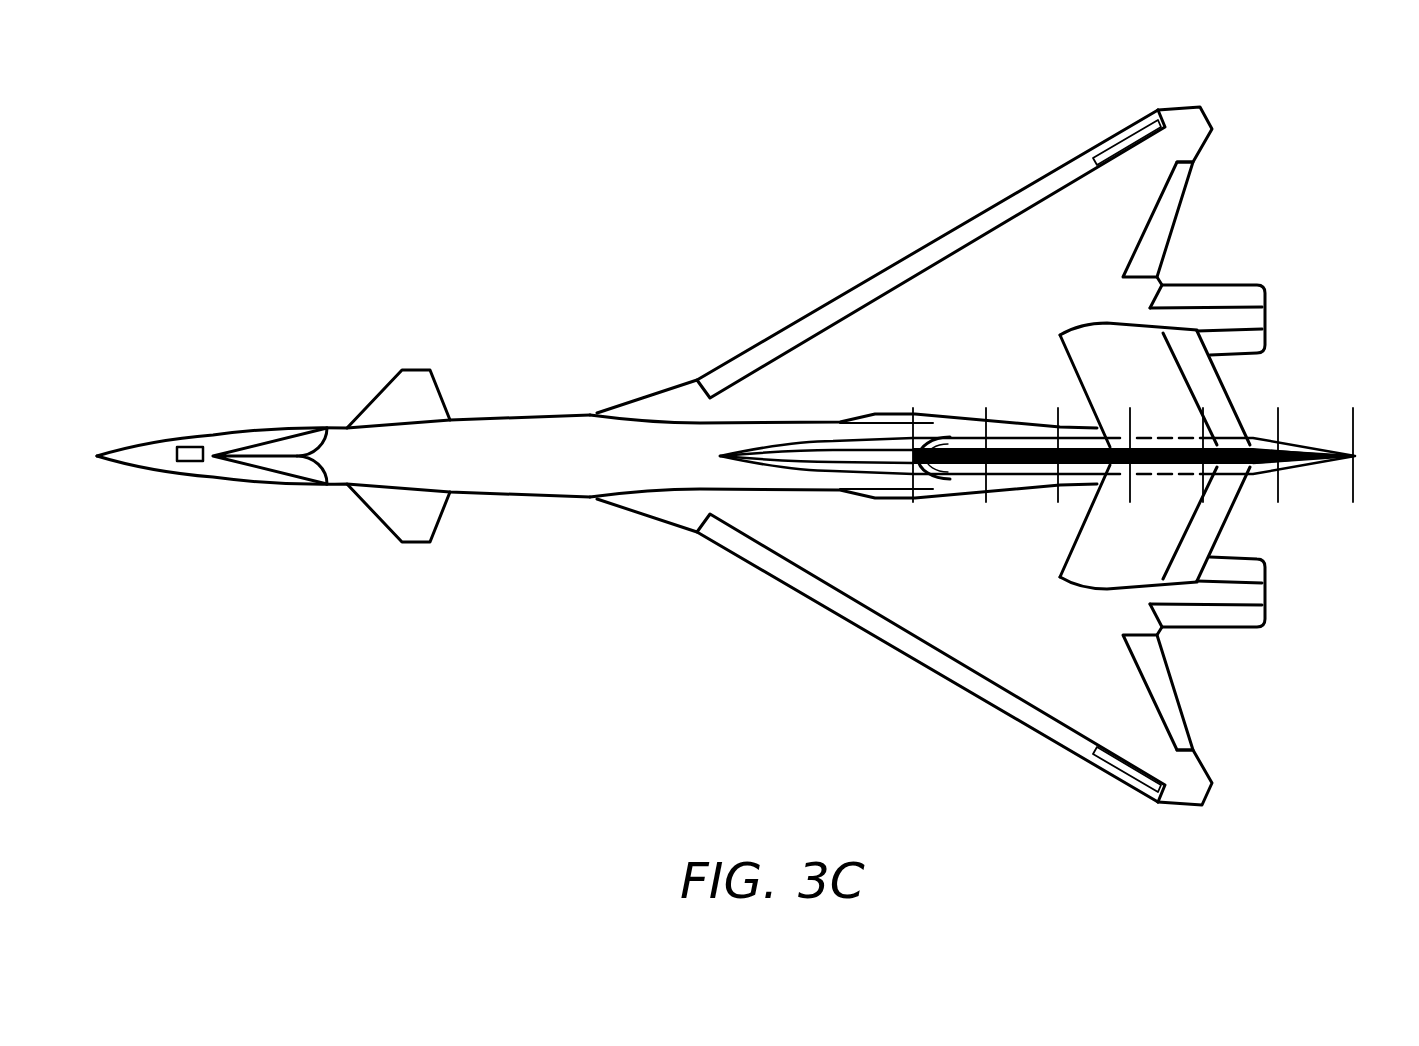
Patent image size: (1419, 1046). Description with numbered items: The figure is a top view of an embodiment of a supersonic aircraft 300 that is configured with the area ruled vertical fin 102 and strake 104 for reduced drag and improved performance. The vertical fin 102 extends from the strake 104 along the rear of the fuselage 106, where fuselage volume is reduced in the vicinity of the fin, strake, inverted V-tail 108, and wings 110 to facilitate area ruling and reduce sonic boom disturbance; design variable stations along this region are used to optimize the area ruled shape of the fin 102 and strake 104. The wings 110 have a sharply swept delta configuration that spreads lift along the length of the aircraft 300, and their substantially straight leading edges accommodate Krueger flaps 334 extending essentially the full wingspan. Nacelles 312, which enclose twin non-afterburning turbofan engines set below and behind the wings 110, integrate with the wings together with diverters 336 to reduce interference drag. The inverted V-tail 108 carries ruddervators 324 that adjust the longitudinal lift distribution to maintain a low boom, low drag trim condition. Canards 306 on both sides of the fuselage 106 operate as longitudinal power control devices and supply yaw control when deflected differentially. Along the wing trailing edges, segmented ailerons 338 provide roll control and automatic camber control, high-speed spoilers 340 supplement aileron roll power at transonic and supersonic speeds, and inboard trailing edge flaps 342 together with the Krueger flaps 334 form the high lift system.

The aircraft 300 is at (200, 229).
The vertical fin 102 is at (1347, 570).
The strake 104 is at (878, 468).
The fuselage 106 is at (530, 498).
The inverted V-tail 108 is at (1148, 553).
The wings 110 is at (1183, 105).
The canards 306 is at (405, 528).
The nacelles 312 is at (1198, 628).
The ruddervators 324 is at (1213, 518).
The Krueger flaps 334 is at (833, 613).
The diverters 336 is at (1268, 590).
The segmented ailerons 338 is at (1193, 715).
The high-speed spoilers 340 is at (1110, 760).
The inboard trailing edge flaps 342 is at (1075, 527).